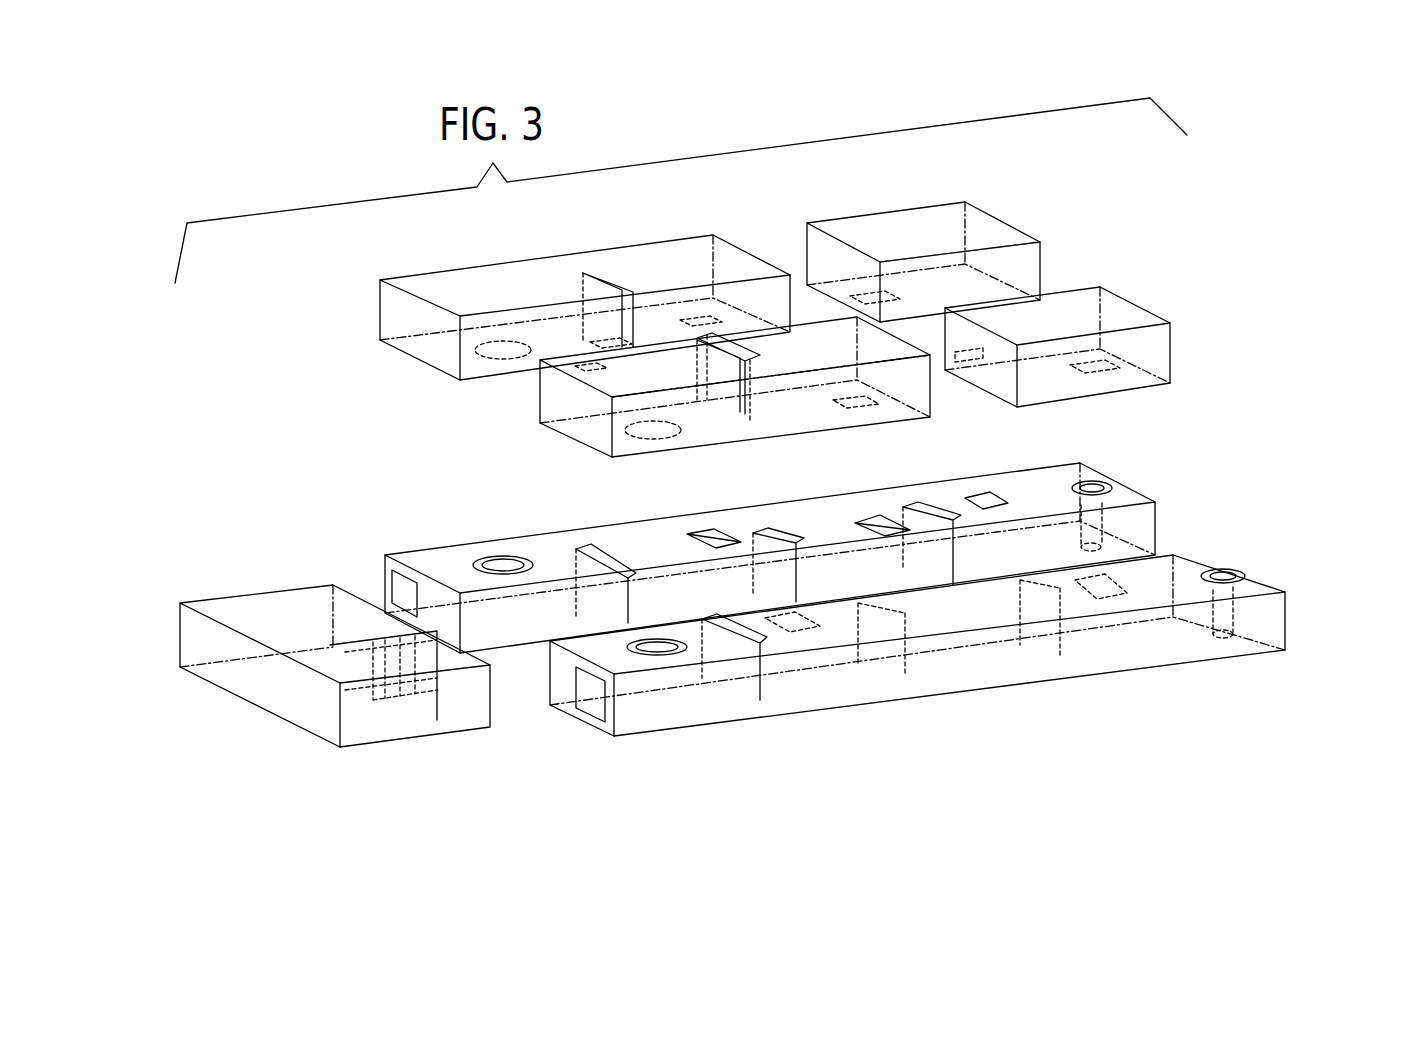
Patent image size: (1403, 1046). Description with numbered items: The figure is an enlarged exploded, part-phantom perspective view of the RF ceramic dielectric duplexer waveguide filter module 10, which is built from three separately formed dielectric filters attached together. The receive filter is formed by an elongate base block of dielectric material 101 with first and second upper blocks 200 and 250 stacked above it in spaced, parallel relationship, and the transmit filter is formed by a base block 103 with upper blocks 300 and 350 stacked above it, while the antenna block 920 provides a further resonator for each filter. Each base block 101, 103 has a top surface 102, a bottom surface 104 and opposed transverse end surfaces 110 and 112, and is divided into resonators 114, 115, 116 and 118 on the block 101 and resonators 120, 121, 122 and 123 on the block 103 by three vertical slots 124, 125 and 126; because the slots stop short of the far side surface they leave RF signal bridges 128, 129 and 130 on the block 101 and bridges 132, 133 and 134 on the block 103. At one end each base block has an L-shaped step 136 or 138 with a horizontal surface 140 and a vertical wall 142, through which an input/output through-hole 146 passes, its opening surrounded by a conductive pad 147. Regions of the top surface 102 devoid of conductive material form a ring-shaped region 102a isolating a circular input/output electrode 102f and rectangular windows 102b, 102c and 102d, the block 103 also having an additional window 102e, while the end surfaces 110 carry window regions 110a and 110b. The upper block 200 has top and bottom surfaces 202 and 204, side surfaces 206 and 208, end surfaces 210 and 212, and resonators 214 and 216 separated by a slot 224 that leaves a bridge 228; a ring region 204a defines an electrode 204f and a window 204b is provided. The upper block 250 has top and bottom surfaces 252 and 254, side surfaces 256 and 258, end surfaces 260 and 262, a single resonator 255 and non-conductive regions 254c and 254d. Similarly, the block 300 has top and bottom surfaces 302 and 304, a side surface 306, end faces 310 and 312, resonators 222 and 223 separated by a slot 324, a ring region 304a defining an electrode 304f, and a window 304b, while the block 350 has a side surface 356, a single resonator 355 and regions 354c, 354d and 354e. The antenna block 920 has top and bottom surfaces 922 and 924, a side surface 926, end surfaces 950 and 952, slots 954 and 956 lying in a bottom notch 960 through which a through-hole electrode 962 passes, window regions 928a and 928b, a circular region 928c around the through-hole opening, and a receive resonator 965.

The RF ceramic dielectric duplexer waveguide filter module 10 is at (708, 770).
The base block of dielectric material 101 is at (1158, 496).
The top surface 102 is at (1005, 632).
The ring shaped region 102a is at (473, 557).
The RF signal transmission window 102b is at (756, 533).
The RF signal transmission window 102c is at (878, 521).
The RF signal transmission window 102d is at (995, 506).
The RF signal transmission window 102e is at (1023, 620).
The RF signal input/output transmission electrode 102f is at (470, 558).
The base block of dielectric material 103 is at (1268, 573).
The bottom surface 104 is at (825, 712).
The side end surface 110 is at (433, 690).
The RF signal transmission window 110a is at (385, 605).
The RF signal transmission window 110b is at (556, 717).
The side end surface 112 is at (1160, 503).
The resonant section 114 is at (495, 633).
The resonant section 115 is at (682, 611).
The resonant section 116 is at (850, 585).
The resonant section 118 is at (1012, 563).
The resonant section 120 is at (1146, 646).
The resonant section 121 is at (963, 676).
The resonant section 122 is at (799, 694).
The resonant section 123 is at (667, 718).
The slot 124 is at (603, 549).
The slot 125 is at (762, 528).
The slot 126 is at (945, 482).
The RF signal bridge 128 is at (576, 549).
The RF signal bridge 129 is at (745, 428).
The RF signal bridge 130 is at (905, 492).
The RF signal bridge 132 is at (1070, 602).
The RF signal bridge 133 is at (920, 672).
The RF signal bridge 134 is at (766, 658).
The end step 136 is at (1150, 488).
The end step 138 is at (1213, 557).
The horizontal surface 140 is at (1105, 475).
The vertical wall 142 is at (1095, 478).
The RF signal input/output through-hole 146 is at (1108, 525).
The input/output pad 147 is at (1105, 486).
The upper block 200 is at (373, 293).
The top surface 202 is at (533, 277).
The bottom surface 204 is at (397, 353).
The ring shaped region 204a is at (592, 348).
The RF signal transmission window 204b is at (722, 300).
The RF signal input/output transmission electrode 204f is at (503, 360).
The side surface 206 is at (410, 285).
The side surface 208 is at (470, 377).
The end surface 210 is at (397, 320).
The end surface 212 is at (765, 263).
The resonant section 214 is at (470, 298).
The resonant section 216 is at (649, 273).
The resonant section 222 is at (795, 360).
The resonant section 223 is at (630, 386).
The slot 224 is at (603, 368).
The RF signal transmission bridge 228 is at (583, 277).
The upper block 250 is at (1047, 253).
The top surface 252 is at (835, 222).
The bottom surface 254 is at (946, 340).
The region devoid of conductive material 254c is at (876, 240).
The region devoid of conductive material 254d is at (960, 280).
The resonant section 255 is at (898, 243).
The side surface 256 is at (823, 215).
The side surface 258 is at (1040, 277).
The end surface 260 is at (828, 275).
The end surface 262 is at (967, 205).
The upper block 300 is at (580, 452).
The top surface 302 is at (596, 368).
The bottom surface 304 is at (667, 447).
The ring shaped region 304a is at (607, 425).
The RF signal transmission window 304b is at (925, 392).
The RF signal input/output transmission electrode 304f is at (630, 450).
The side surface 306 is at (775, 418).
The end surface 310 is at (545, 400).
The end surface 312 is at (853, 403).
The slot 324 is at (733, 347).
The upper block 350 is at (1110, 285).
The region devoid of conductive material 354c is at (1177, 377).
The region devoid of conductive material 354d is at (1173, 377).
The region devoid of conductive material 354e is at (987, 400).
The resonant section 355 is at (1043, 325).
The side surface 356 is at (1147, 340).
The antenna block 920 is at (405, 746).
The top surface 922 is at (230, 603).
The bottom surface 924 is at (215, 687).
The side surface 926 is at (180, 660).
The RF signal transmission window 928a is at (297, 597).
The RF signal transmission window 928b is at (462, 722).
The circular region 928c is at (333, 620).
The end surface 950 is at (372, 727).
The end surface 952 is at (180, 623).
The slot 954 is at (407, 635).
The slot 956 is at (417, 737).
The step or notch 960 is at (282, 713).
The through-hole 962 is at (292, 723).
The Rx RF signal resonant section 965 is at (252, 630).